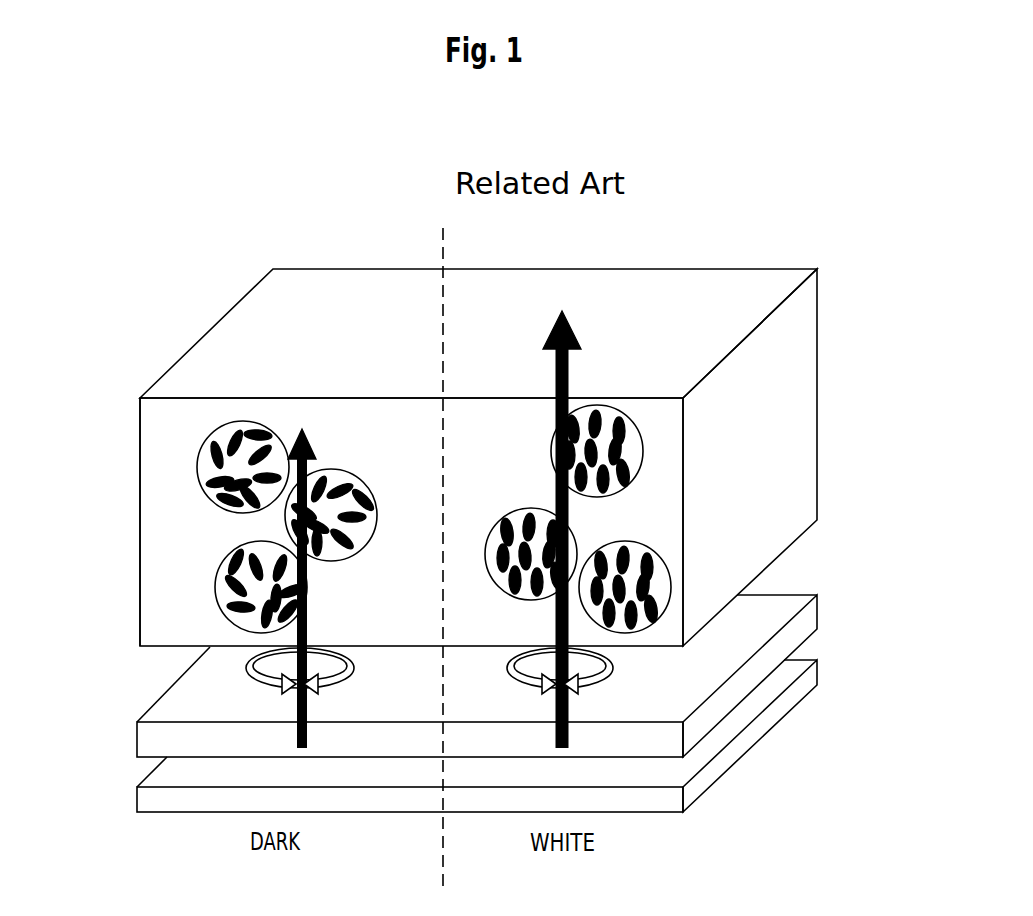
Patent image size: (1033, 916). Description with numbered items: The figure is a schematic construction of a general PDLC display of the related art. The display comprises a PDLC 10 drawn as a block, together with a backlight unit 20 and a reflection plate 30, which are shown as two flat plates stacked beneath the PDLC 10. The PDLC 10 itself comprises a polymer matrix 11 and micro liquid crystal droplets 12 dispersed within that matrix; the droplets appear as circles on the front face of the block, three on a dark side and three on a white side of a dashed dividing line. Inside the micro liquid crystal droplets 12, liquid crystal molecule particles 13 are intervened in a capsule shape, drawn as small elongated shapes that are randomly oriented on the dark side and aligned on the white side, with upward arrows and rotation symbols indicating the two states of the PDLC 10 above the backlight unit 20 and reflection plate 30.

The PDLC 10 is at (808, 390).
The polymer matrix 11 is at (150, 483).
The micro liquid crystal droplets 12 is at (245, 421).
The liquid crystal molecule particles 13 is at (223, 597).
The backlight unit 20 is at (810, 610).
The reflection plate 30 is at (810, 672).